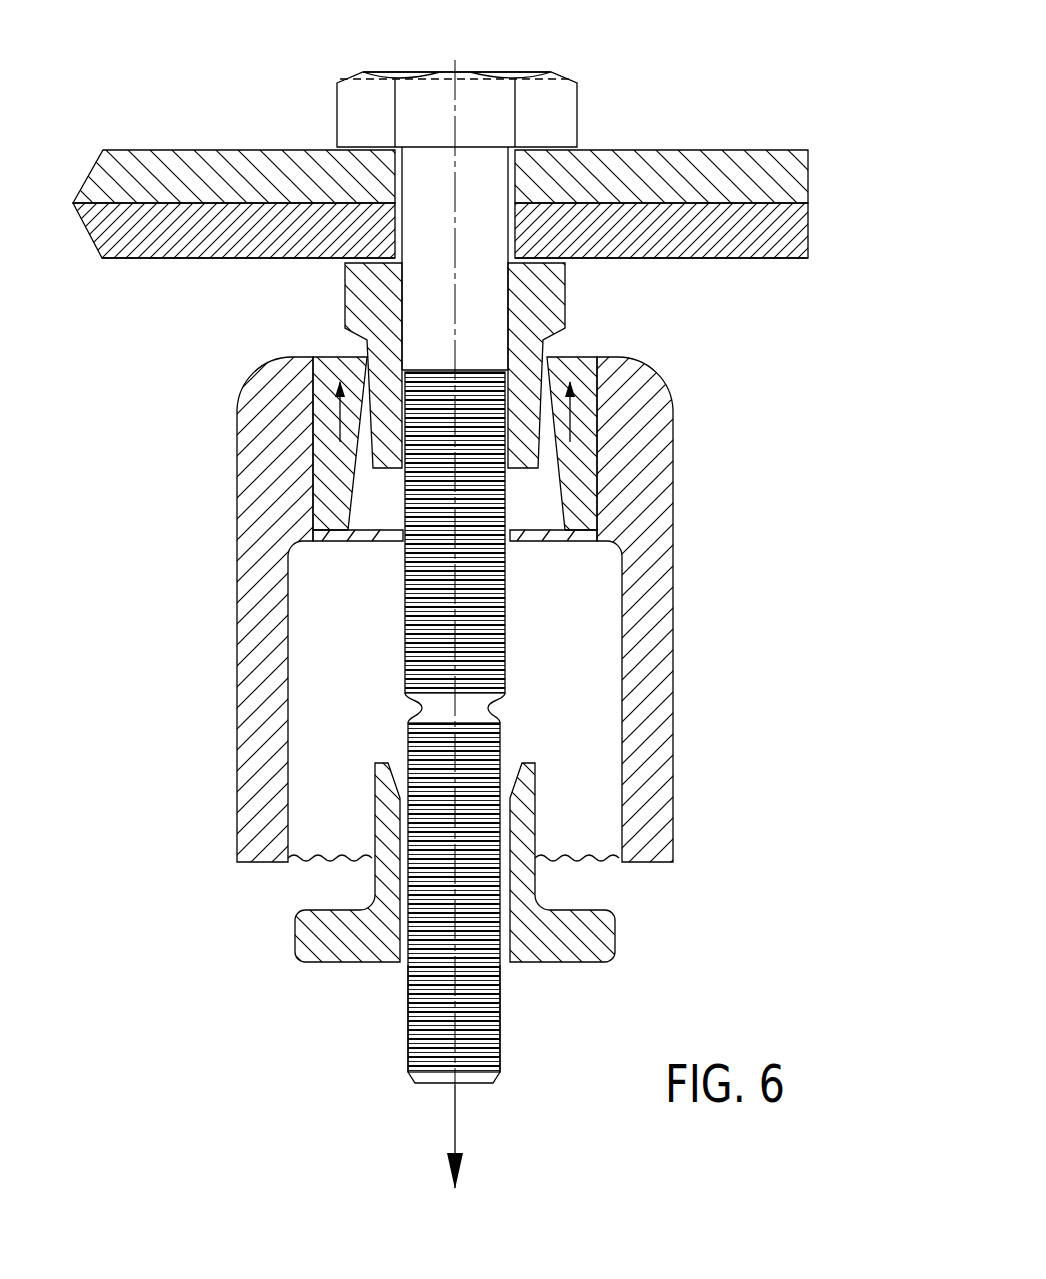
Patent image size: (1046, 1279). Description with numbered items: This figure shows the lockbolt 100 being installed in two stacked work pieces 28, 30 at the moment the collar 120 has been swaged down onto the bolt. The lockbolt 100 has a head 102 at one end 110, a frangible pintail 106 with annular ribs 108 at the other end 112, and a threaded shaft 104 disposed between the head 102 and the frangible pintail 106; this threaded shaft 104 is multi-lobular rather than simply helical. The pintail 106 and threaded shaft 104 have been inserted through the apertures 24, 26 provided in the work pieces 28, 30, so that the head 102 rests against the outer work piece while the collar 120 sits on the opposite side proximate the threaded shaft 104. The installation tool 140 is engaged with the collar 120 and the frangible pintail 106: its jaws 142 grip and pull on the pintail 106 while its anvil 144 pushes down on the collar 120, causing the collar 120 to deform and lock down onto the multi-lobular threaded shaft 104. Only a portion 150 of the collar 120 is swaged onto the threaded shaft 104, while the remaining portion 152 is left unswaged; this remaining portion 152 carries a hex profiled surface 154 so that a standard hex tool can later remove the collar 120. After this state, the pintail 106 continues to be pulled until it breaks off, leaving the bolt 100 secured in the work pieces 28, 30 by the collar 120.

The work piece 28 is at (440, 200).
The aperture 24 is at (512, 183).
The aperture 26 is at (515, 238).
The work piece 30 is at (237, 260).
The lockbolt 100 is at (460, 603).
The head 102 is at (357, 113).
The one end of the bolt 110 is at (514, 72).
The threaded shaft 104 is at (508, 605).
The frangible pintail 106 is at (510, 752).
The annular ribs 108 is at (500, 1028).
The other end of the bolt 112 is at (477, 1085).
The collar 120 is at (467, 365).
The remaining portion of the collar 152 is at (573, 306).
The hex profiled surface 154 is at (345, 298).
The installation tool 140 is at (679, 414).
The jaws 142 is at (366, 864).
The anvil 144 is at (605, 398).
The swaged portion of the collar 150 is at (544, 426).